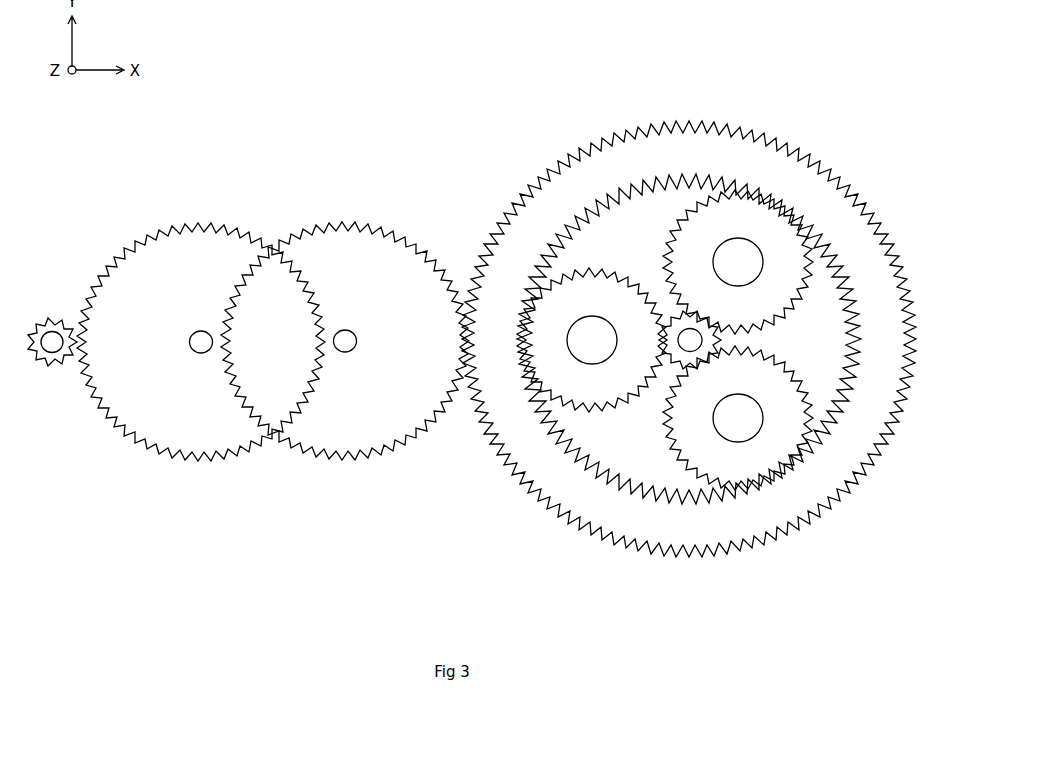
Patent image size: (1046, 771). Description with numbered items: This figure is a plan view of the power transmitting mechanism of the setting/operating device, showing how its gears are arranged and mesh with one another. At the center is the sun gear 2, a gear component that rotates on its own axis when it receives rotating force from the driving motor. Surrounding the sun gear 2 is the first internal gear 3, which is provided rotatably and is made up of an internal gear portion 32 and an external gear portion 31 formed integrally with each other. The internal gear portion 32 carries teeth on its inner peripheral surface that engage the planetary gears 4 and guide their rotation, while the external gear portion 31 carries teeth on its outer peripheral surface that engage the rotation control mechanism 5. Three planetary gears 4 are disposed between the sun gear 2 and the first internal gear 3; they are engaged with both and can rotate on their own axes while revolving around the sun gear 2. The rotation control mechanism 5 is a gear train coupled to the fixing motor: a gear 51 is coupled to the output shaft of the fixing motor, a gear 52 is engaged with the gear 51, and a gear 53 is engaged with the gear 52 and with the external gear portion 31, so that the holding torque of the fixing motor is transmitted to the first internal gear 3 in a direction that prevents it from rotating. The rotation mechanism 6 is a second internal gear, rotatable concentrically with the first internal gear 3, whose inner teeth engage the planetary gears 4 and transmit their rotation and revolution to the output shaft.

The sun gear 2 is at (712, 340).
The first internal gear 3 is at (436, 114).
The external gear portion 31 is at (490, 243).
The internal gear portion 32 is at (553, 233).
The planetary gears 4 is at (719, 210).
The rotation control mechanism 5 is at (325, 541).
The gear 51 is at (55, 360).
The gear 52 is at (136, 425).
The gear 53 is at (310, 440).
The rotation mechanism 6 is at (623, 197).